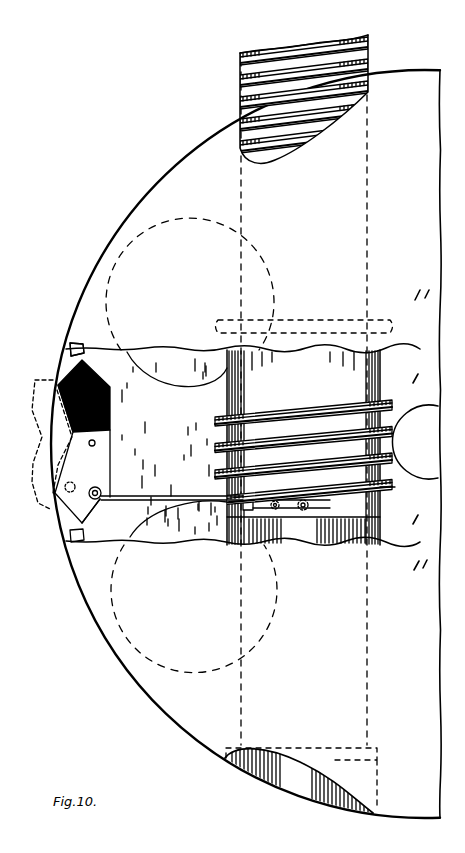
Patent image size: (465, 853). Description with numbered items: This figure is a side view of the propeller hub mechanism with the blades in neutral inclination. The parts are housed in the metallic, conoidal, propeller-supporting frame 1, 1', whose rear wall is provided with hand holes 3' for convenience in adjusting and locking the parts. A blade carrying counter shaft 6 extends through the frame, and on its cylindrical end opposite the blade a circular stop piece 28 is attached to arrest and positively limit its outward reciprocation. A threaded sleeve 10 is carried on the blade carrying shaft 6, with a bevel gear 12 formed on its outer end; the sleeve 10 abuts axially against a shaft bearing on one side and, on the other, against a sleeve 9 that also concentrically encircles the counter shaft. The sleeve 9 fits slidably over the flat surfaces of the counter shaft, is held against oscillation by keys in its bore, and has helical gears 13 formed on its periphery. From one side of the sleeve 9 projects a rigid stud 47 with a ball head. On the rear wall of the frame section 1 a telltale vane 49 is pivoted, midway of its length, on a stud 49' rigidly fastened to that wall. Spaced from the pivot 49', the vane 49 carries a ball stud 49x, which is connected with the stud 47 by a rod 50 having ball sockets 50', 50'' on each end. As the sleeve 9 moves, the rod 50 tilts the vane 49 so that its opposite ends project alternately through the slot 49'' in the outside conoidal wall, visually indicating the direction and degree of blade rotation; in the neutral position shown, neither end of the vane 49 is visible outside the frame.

The blade carrying counter shaft 6 is at (370, 45).
The bevel gear 12 is at (392, 325).
The sleeve 10 is at (303, 447).
The helical gear 13 is at (222, 421).
The frame section 1 is at (415, 449).
The frame section 1' is at (421, 430).
The sleeve 9 is at (382, 500).
The stud 47 is at (311, 504).
The ball socket 50' is at (303, 530).
The rod 50 is at (172, 481).
The ball socket 50'' is at (113, 481).
The vane 49 is at (91, 442).
The stud 49' is at (120, 438).
The slot 49'' is at (53, 442).
The ball stud 49x is at (97, 498).
The hand hole 3' is at (177, 444).
The stop piece 28 is at (298, 762).